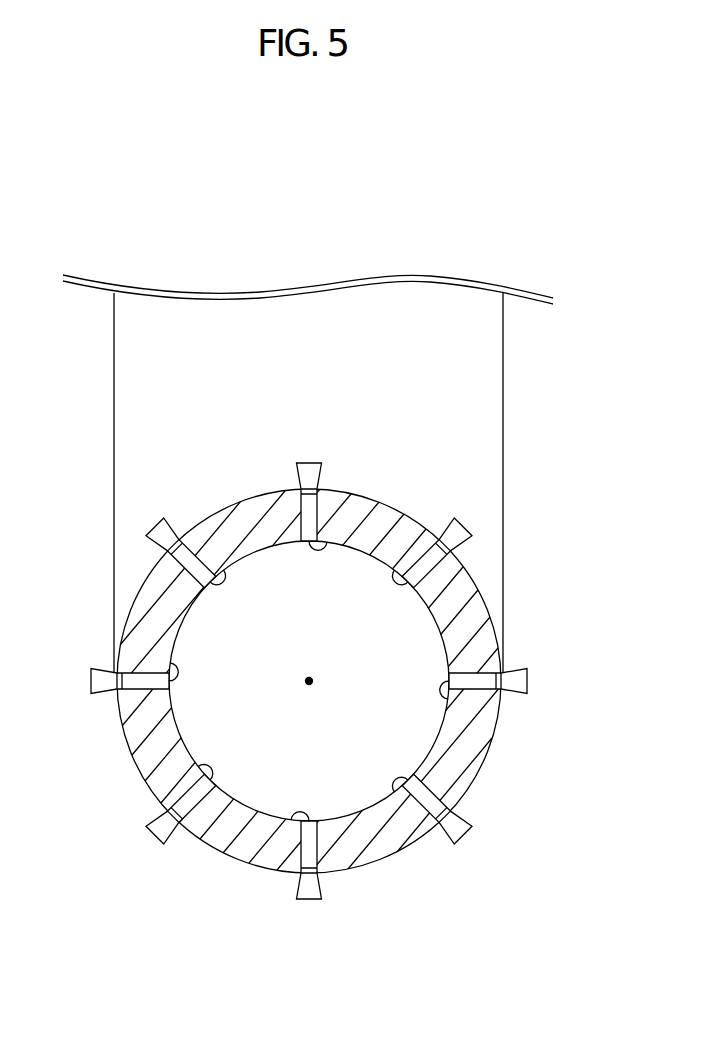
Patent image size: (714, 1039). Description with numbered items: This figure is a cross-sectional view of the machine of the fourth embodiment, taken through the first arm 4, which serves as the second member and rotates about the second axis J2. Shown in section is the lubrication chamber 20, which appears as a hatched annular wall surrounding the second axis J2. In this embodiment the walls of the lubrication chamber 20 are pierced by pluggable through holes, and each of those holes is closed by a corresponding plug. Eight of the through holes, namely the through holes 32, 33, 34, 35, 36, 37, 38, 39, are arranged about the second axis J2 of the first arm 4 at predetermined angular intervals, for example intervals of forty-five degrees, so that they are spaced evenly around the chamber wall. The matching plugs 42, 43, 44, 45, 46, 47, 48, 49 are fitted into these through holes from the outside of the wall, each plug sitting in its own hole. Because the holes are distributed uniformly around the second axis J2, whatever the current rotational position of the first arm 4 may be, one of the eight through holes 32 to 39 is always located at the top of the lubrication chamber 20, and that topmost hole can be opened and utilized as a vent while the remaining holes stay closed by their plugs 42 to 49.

The first arm 4 is at (492, 387).
The lubrication chamber 20 is at (452, 630).
The through hole 32 is at (330, 540).
The through hole 33 is at (287, 828).
The through hole 34 is at (400, 566).
The through hole 35 is at (498, 697).
The through hole 36 is at (432, 832).
The through hole 37 is at (165, 805).
The through hole 38 is at (114, 663).
The through hole 39 is at (212, 568).
The plug 42 is at (311, 462).
The plug 43 is at (309, 903).
The plug 44 is at (466, 526).
The plug 45 is at (527, 678).
The plug 46 is at (466, 840).
The plug 47 is at (158, 836).
The plug 48 is at (91, 677).
The plug 49 is at (155, 524).
The second axis J2 is at (315, 687).